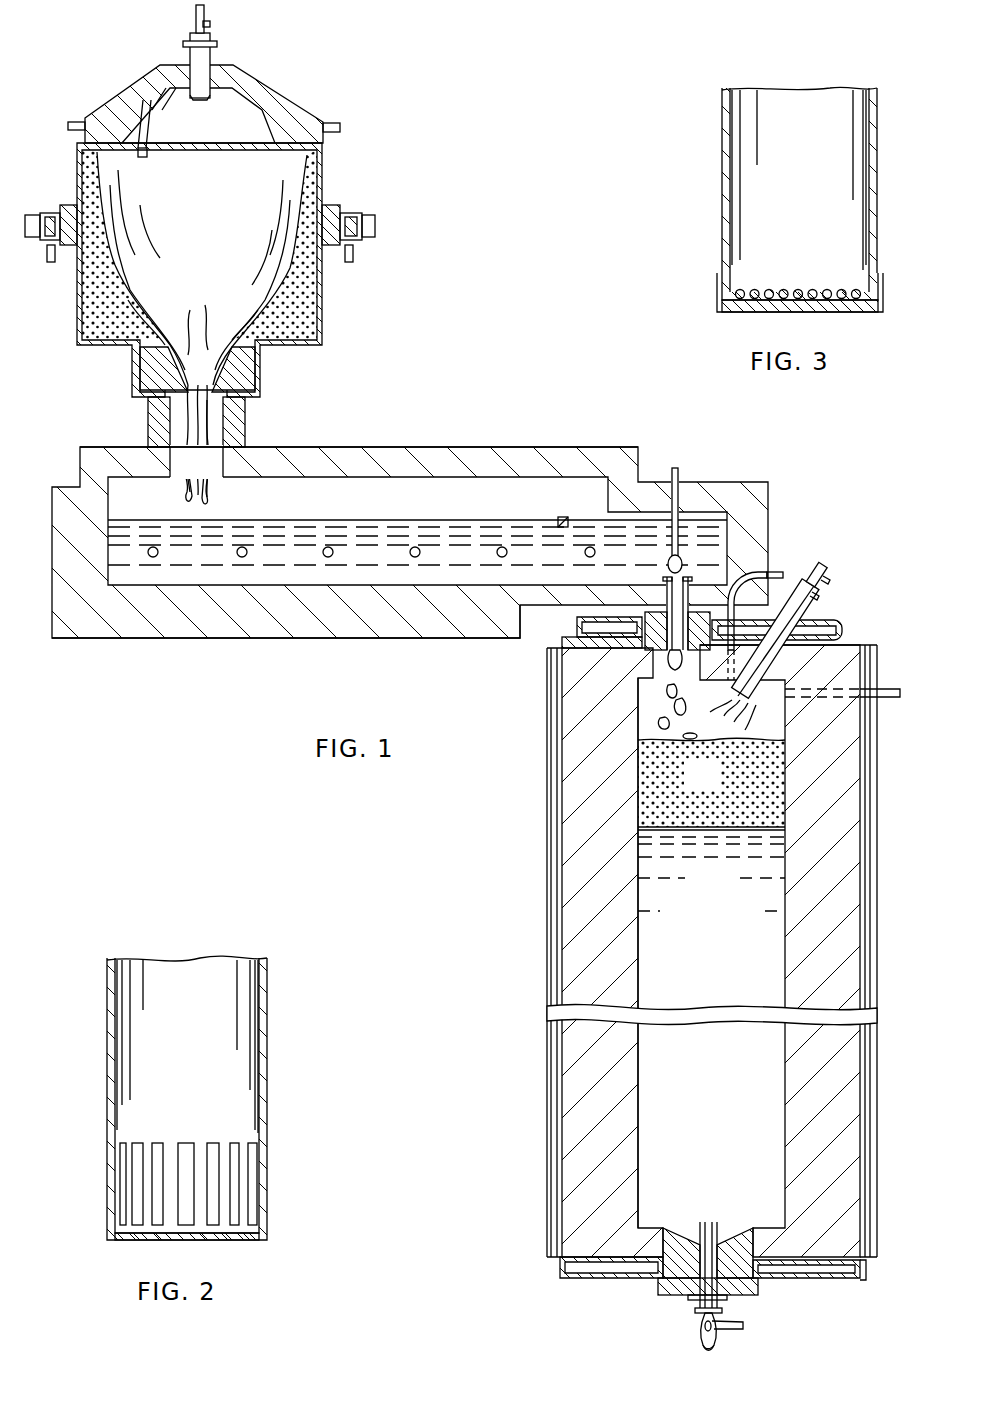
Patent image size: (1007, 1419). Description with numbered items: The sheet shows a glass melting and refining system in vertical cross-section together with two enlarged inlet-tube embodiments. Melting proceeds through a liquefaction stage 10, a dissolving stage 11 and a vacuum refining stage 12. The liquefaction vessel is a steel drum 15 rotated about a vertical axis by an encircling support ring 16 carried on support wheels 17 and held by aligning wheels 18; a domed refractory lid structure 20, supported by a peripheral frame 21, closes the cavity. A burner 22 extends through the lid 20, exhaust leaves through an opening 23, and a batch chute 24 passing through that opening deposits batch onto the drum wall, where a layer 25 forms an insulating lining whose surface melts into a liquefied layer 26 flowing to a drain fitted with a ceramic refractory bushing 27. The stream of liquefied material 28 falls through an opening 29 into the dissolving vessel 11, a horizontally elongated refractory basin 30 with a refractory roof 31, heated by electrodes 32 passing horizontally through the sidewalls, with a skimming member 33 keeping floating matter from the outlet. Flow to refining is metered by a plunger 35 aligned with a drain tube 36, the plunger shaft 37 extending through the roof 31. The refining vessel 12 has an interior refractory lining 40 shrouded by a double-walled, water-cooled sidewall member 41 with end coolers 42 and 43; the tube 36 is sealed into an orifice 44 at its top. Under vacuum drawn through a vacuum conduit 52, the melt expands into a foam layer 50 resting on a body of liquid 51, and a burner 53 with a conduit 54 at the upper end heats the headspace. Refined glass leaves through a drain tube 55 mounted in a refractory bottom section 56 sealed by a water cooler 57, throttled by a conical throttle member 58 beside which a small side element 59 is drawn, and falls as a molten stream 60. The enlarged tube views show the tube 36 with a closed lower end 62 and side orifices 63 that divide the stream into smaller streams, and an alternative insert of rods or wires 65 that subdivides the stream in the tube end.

In FIG. 1, the liquefaction stage 10 is at (341, 168).
In FIG. 1, the dissolving stage 11 is at (248, 656).
In FIG. 1, the vacuum refining stage 12 is at (547, 799).
In FIG. 1, the drum 15 is at (321, 328).
In FIG. 1, the support ring 16 is at (355, 215).
In FIG. 1, the support wheels 17 is at (51, 262).
In FIG. 1, the aligning wheels 18 is at (35, 214).
In FIG. 1, the lid structure 20 is at (265, 93).
In FIG. 1, the peripheral frame 21 is at (333, 128).
In FIG. 1, the burner 22 is at (210, 60).
In FIG. 1, the exhaust opening 23 is at (152, 112).
In FIG. 1, the batch chute 24 is at (148, 152).
In FIG. 1, the batch layer 25 is at (290, 209).
In FIG. 1, the liquefied layer 26 is at (276, 263).
In FIG. 1, the ceramic refractory bushing 27 is at (226, 336).
In FIG. 1, the stream of liquefied material 28 is at (206, 488).
In FIG. 1, the opening 29 is at (165, 470).
In FIG. 1, the refractory basin 30 is at (446, 641).
In FIG. 1, the refractory roof 31 is at (480, 447).
In FIG. 1, the electrodes 32 is at (416, 557).
In FIG. 1, the skimming member 33 is at (556, 519).
In FIG. 1, the plunger 35 is at (667, 563).
In FIG. 1, the drain tube 36 is at (665, 580).
In FIG. 2, the drain tube 36 is at (268, 1012).
In FIG. 3, the drain tube 36 is at (879, 106).
In FIG. 1, the shaft 37 is at (679, 470).
In FIG. 1, the refractory lining 40 is at (641, 976).
In FIG. 1, the sidewall member 41 is at (548, 1082).
In FIG. 1, the end cooler 42 is at (843, 626).
In FIG. 1, the end cooler 43 is at (600, 1279).
In FIG. 1, the orifice 44 is at (655, 668).
In FIG. 1, the foam layer 50 is at (690, 787).
In FIG. 1, the body of liquid 51 is at (692, 922).
In FIG. 1, the vacuum conduit 52 is at (902, 690).
In FIG. 1, the burner 53 is at (827, 575).
In FIG. 1, the conduit 54 is at (781, 572).
In FIG. 1, the drain tube 55 is at (700, 1232).
In FIG. 1, the refractory bottom section 56 is at (718, 1236).
In FIG. 1, the water cooler 57 is at (660, 1292).
In FIG. 1, the conical throttle member 58 is at (700, 1330).
In FIG. 1, the gas inlet tube 59 is at (745, 1325).
In FIG. 1, the molten stream 60 is at (715, 1351).
In FIG. 2, the closed lower end 62 is at (256, 1241).
In FIG. 2, the side orifices 63 is at (185, 1143).
In FIG. 3, the rods or wires 65 is at (794, 290).